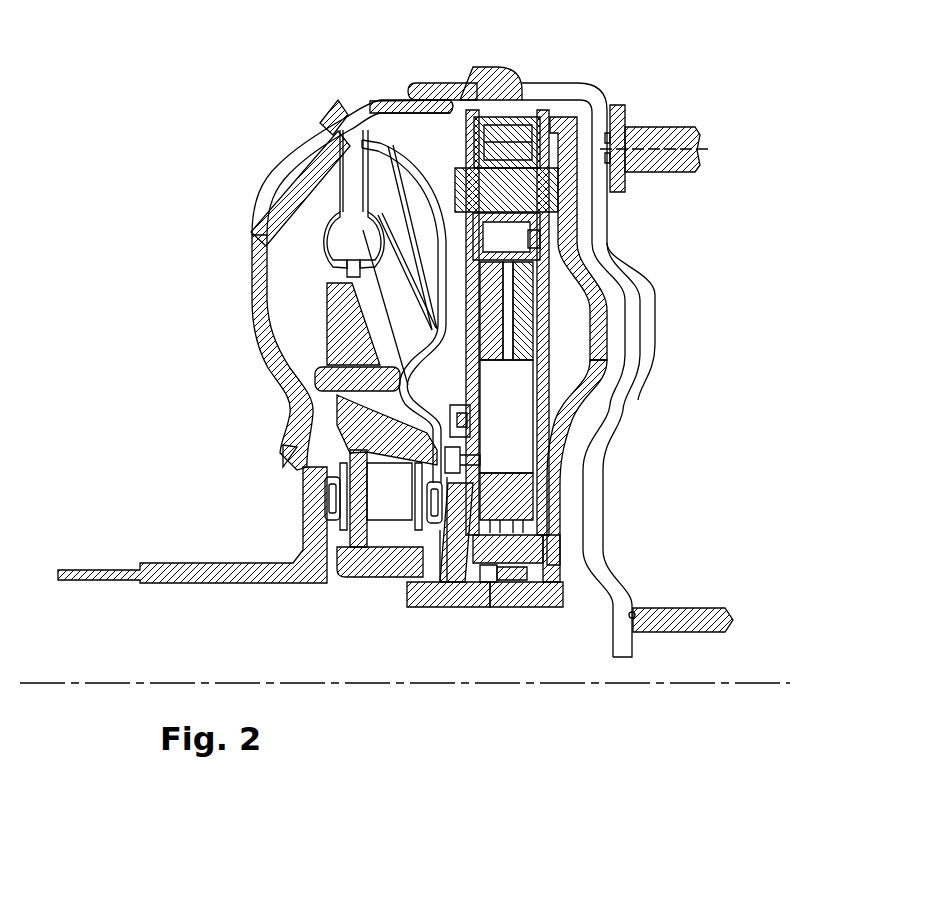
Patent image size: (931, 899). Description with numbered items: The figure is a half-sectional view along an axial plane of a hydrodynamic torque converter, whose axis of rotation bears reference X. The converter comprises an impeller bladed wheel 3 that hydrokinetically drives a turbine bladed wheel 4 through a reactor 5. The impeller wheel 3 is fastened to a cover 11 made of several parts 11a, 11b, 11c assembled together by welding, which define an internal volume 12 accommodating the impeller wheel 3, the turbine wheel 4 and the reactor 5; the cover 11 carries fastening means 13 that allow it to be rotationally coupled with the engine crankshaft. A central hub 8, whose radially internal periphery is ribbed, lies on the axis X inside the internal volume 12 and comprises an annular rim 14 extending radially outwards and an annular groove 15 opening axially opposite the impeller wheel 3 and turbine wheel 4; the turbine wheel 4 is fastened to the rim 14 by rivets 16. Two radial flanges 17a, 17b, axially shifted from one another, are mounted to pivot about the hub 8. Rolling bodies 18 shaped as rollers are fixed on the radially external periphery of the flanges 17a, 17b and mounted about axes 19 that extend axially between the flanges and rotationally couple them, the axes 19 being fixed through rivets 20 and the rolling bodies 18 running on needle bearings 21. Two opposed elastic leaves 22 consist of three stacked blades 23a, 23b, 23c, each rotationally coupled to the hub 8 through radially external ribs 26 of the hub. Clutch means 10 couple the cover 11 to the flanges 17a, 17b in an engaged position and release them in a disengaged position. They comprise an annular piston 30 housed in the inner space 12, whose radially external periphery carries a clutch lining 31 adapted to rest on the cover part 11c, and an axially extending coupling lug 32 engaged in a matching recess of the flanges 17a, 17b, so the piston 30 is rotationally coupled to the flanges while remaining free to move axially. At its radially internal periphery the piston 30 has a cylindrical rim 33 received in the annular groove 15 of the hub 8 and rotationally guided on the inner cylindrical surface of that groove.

The impeller bladed wheel 3 is at (295, 258).
The turbine bladed wheel 4 is at (410, 200).
The reactor 5 is at (335, 325).
The central hub 8 is at (433, 590).
The clutch means 10 is at (600, 283).
The cover 11 is at (600, 82).
The cover part 11a is at (312, 138).
The cover part 11b is at (437, 83).
The cover part 11c is at (555, 97).
The internal volume 12 is at (387, 117).
The fastening means 13 is at (680, 140).
The annular rim 14 is at (457, 597).
The annular groove 15 is at (490, 587).
The rivets 16 is at (447, 462).
The radial flange 17a is at (470, 90).
The radial flange 17b is at (575, 300).
The rolling bodies 18 is at (530, 238).
The axes 19 is at (540, 217).
The rivets 20 is at (543, 192).
The needle bearings 21 is at (508, 140).
The elastic leaves 22 is at (495, 398).
The blade 23a is at (503, 310).
The blade 23b is at (517, 340).
The blade 23c is at (540, 380).
The radially external ribs 26 is at (548, 575).
The annular piston 30 is at (567, 423).
The clutch lining 31 is at (592, 155).
The coupling lug 32 is at (497, 120).
The cylindrical rim 33 is at (507, 572).
The axis X is at (673, 683).